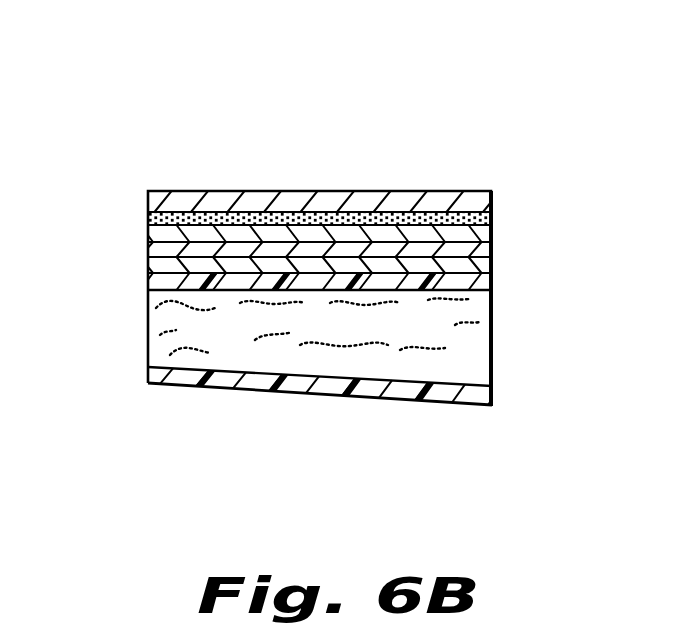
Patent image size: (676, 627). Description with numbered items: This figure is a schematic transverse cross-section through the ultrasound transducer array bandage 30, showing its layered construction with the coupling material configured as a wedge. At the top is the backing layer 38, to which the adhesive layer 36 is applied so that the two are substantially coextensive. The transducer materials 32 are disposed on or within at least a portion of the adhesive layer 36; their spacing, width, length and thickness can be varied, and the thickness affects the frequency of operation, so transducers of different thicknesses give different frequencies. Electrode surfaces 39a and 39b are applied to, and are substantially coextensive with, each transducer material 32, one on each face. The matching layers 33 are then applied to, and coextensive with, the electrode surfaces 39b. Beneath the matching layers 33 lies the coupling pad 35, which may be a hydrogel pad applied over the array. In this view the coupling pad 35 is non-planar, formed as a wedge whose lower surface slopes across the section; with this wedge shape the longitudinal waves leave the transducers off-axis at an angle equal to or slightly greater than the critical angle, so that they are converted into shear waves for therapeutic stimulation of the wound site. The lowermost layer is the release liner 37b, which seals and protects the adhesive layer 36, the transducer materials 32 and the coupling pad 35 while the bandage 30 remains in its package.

The ultrasound transducer array bandage 30 is at (88, 147).
The backing layer 38 is at (406, 202).
The adhesive layer 36 is at (473, 210).
The electrode surface 39a is at (148, 232).
The transducer materials 32 is at (493, 248).
The electrode surface 39b is at (493, 265).
The matching layers 33 is at (148, 278).
The coupling pad 35 is at (478, 350).
The release liner 37b is at (455, 392).